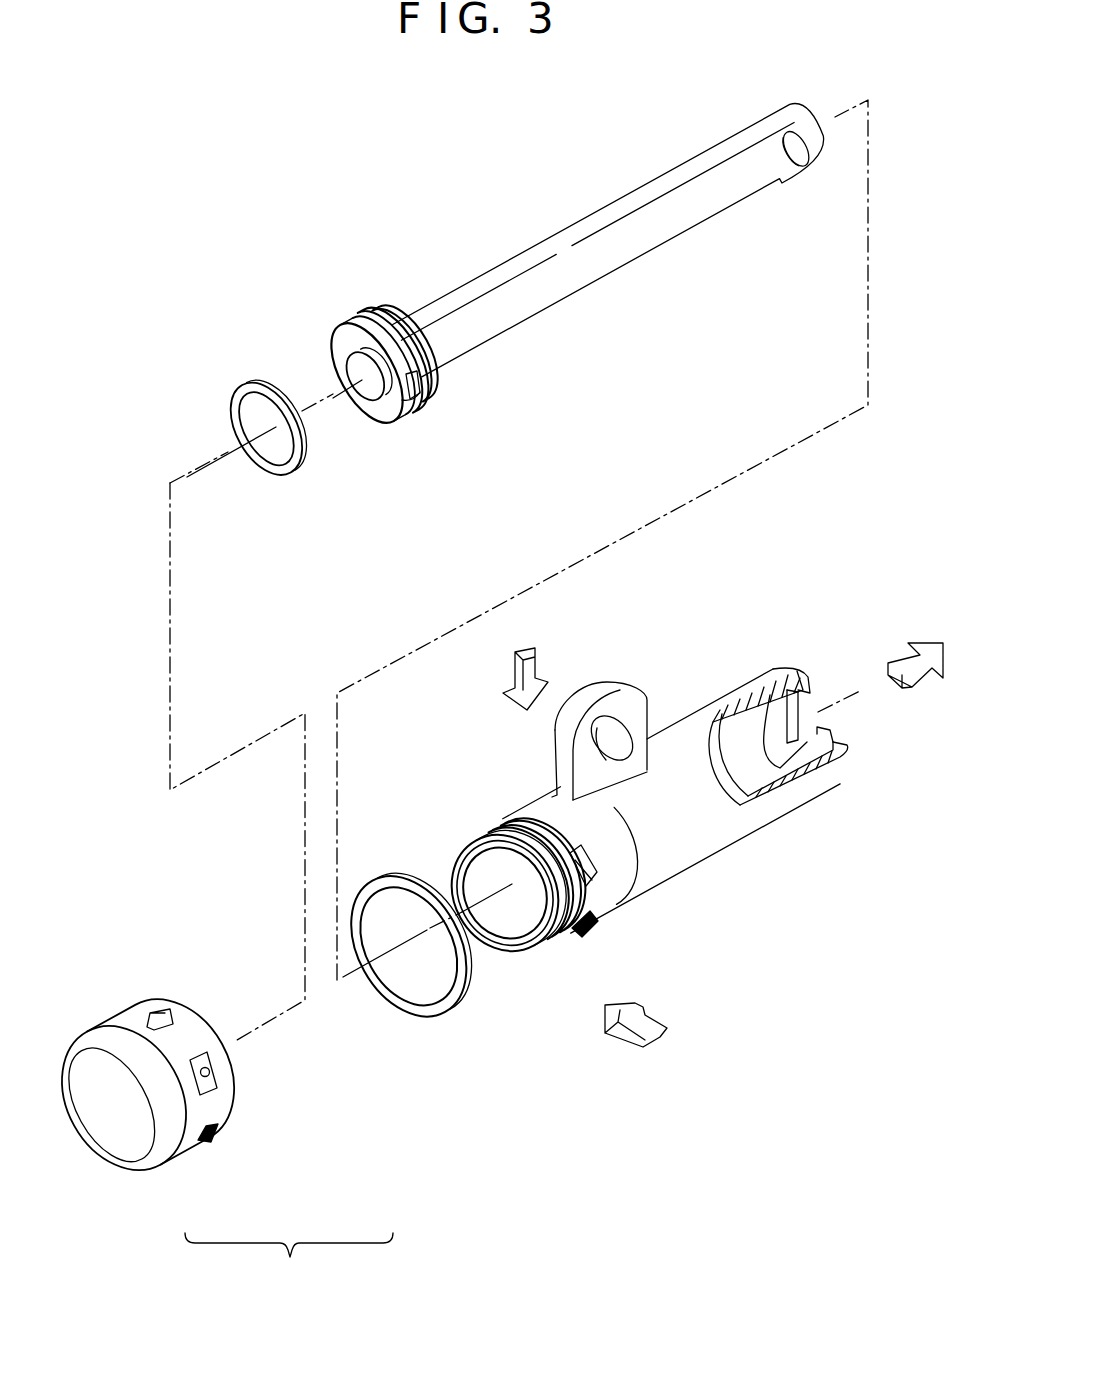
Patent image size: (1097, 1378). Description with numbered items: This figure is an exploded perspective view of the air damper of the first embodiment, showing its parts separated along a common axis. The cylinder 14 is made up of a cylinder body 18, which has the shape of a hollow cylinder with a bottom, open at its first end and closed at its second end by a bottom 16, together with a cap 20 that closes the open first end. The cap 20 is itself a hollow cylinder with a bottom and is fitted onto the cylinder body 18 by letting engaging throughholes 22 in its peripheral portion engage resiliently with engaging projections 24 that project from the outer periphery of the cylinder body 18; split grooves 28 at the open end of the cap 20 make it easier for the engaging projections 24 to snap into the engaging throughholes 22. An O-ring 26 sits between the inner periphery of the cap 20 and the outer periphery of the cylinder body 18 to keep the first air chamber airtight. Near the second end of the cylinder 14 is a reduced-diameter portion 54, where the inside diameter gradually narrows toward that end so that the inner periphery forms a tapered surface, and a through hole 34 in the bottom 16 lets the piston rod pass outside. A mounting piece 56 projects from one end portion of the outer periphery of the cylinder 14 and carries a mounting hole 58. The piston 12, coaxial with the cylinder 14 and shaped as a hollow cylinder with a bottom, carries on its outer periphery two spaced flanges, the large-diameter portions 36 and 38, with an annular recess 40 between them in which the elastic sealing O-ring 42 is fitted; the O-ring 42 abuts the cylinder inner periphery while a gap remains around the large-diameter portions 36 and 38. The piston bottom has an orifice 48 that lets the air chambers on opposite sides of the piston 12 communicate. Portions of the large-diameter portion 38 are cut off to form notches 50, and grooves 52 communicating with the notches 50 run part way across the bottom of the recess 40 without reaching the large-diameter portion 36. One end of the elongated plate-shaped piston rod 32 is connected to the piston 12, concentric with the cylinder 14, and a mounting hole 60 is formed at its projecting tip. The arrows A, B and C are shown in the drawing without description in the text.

The piston 12 is at (370, 425).
The cylinder 14 is at (289, 1263).
The bottom 16 is at (832, 729).
The cylinder body 18 is at (522, 960).
The cap 20 is at (146, 1178).
The engaging throughholes 22 is at (215, 1138).
The engaging projections 24 is at (596, 928).
The O-ring 26 is at (427, 1008).
The split grooves 28 is at (160, 1009).
The piston rod 32 is at (533, 305).
The through hole 34 is at (802, 715).
The large-diameter portion 36 is at (338, 345).
The large-diameter portion 38 is at (373, 313).
The annular recess 40 is at (405, 325).
The O-ring 42 is at (253, 468).
The orifice 48 is at (363, 363).
The notches 50 is at (420, 394).
The grooves 52 is at (416, 381).
The reduced-diameter portion 54 is at (763, 767).
The mounting piece 56 is at (637, 708).
The mounting hole 58 is at (614, 762).
The mounting hole 60 is at (793, 173).
The direction arrow A is at (644, 1008).
The direction arrow B is at (531, 666).
The direction arrow C is at (915, 670).